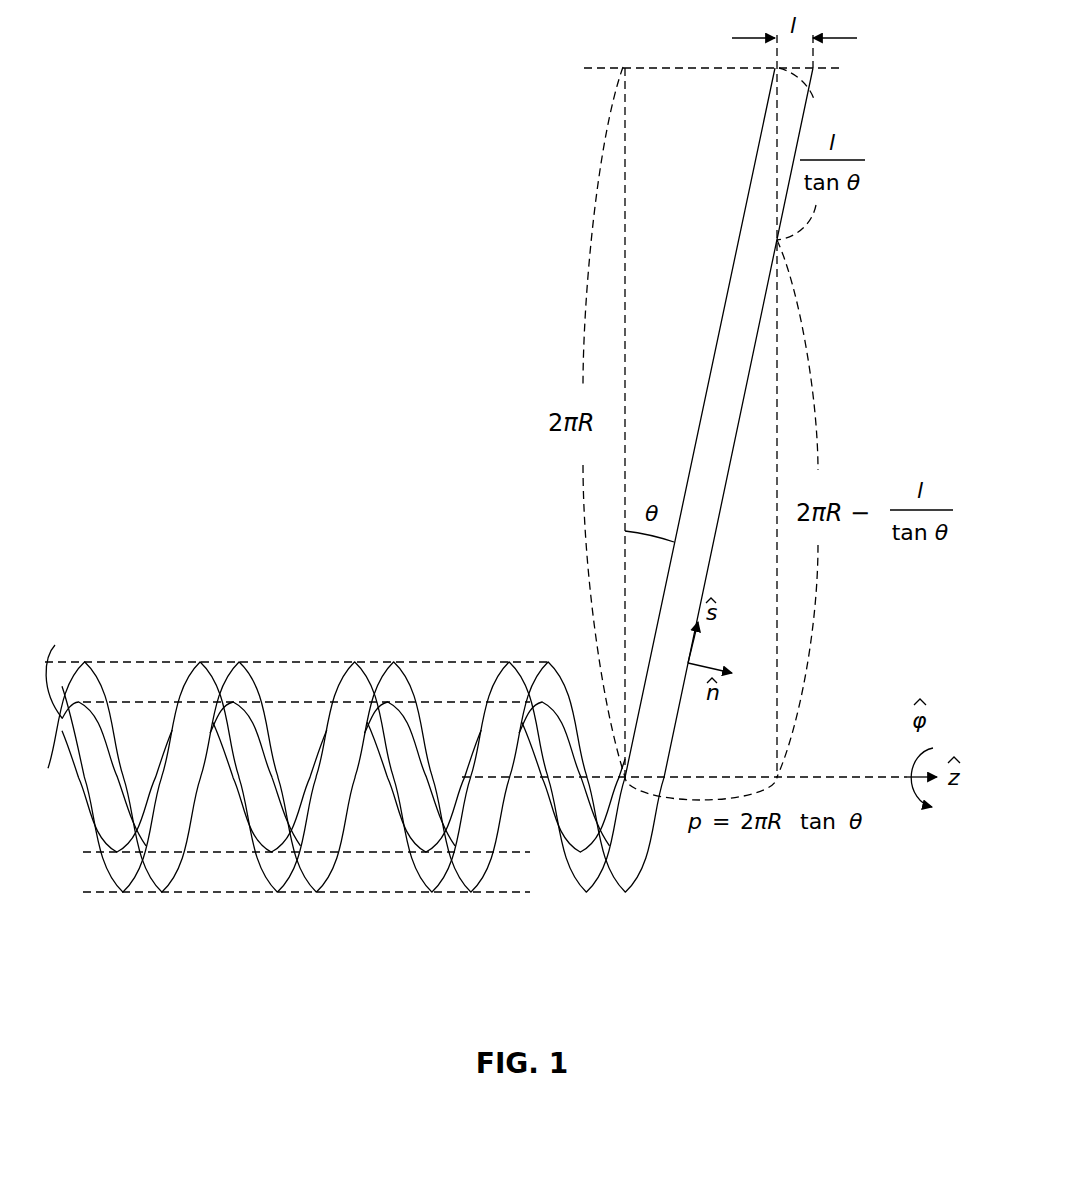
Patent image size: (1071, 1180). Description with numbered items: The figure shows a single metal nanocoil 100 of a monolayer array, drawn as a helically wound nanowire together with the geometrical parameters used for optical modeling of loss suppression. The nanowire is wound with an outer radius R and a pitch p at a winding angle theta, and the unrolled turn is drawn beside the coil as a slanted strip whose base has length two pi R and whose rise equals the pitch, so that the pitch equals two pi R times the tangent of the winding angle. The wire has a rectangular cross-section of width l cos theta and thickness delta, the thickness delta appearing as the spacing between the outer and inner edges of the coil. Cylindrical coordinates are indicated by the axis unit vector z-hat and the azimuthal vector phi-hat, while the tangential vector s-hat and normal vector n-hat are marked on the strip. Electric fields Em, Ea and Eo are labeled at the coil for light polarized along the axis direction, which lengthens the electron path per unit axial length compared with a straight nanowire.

The tape helix 100 is at (429, 480).
The metal tape field region Em is at (362, 687).
The inter-turn gap field region Ea is at (293, 687).
The outer field region Eo is at (222, 800).
The thickness delta is at (455, 620).